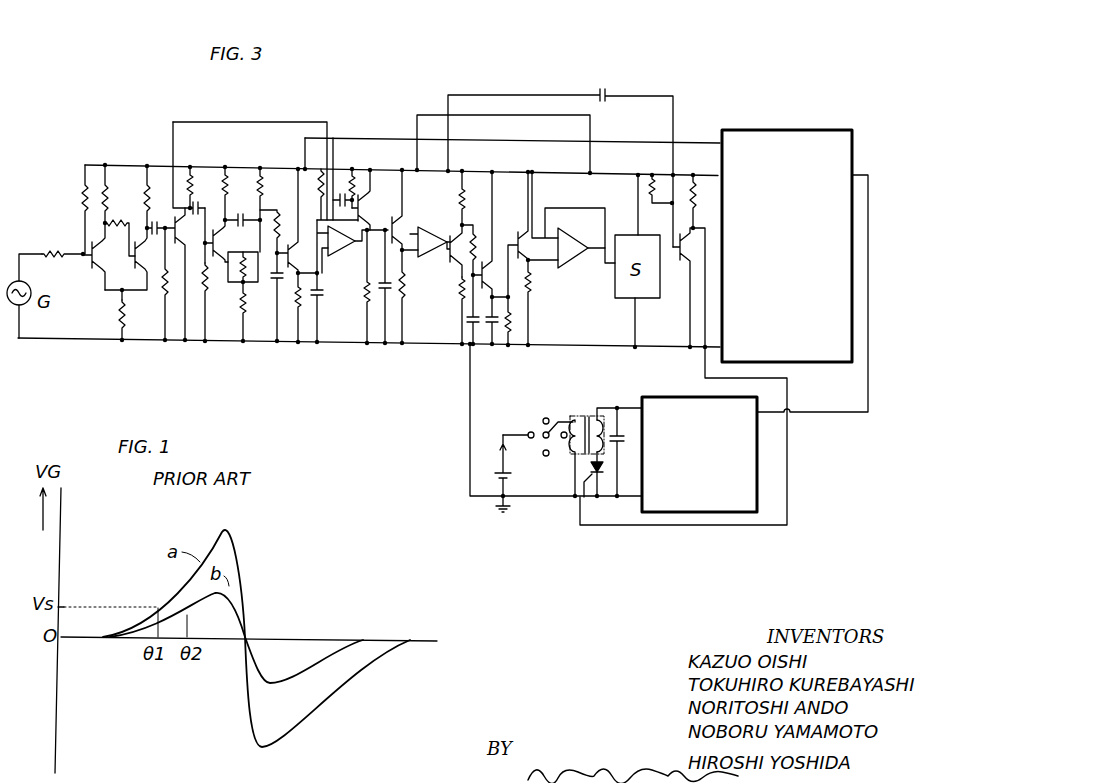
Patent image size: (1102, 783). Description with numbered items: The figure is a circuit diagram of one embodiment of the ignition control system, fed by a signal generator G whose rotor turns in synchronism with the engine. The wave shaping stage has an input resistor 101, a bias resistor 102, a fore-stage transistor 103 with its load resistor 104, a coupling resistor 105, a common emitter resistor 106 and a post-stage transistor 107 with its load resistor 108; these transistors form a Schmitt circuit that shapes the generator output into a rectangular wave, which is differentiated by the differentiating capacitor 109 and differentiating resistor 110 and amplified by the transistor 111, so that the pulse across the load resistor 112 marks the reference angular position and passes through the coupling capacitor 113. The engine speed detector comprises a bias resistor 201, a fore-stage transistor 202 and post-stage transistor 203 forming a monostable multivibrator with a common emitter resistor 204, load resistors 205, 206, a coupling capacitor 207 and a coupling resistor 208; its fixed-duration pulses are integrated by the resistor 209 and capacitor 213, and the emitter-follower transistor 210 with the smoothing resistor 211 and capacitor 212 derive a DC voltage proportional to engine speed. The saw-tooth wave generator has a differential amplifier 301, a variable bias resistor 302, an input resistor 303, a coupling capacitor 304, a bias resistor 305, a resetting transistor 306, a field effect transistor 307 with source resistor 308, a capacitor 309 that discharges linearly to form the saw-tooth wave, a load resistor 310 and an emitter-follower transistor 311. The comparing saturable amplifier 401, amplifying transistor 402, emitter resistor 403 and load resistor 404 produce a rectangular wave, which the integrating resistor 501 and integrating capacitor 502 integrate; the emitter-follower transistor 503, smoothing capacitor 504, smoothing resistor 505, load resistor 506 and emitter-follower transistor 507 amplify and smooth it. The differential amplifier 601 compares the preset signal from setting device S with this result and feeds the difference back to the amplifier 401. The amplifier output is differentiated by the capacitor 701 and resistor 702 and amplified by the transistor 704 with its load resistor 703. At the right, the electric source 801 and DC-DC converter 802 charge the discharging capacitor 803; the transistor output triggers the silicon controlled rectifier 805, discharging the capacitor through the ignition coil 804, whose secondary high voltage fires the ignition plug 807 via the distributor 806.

The input resistor 101 is at (56, 249).
The bias resistor 102 is at (79, 209).
The fore-stage transistor 103 is at (88, 270).
The load resistor 104 is at (102, 180).
The coupling resistor 105 is at (120, 220).
The common emitter resistor 106 is at (118, 318).
The post-stage transistor 107 is at (126, 259).
The load resistor 108 is at (148, 180).
The differentiating capacitor 109 is at (134, 306).
The differentiating resistor 110 is at (170, 300).
The transistor for amplifying a differentiated pulse 111 is at (182, 250).
The load resistor 112 is at (189, 172).
The coupling capacitor 113 is at (195, 204).
The bias resistor 201 is at (200, 225).
The fore-stage transistor 202 is at (233, 296).
The post-stage transistor 203 is at (263, 320).
The common emitter resistor 204 is at (246, 320).
The load resistor 205 is at (223, 172).
The load resistor 206 is at (264, 174).
The coupling capacitor 207 is at (245, 212).
The coupling resistor 208 is at (245, 267).
The resistor 209 is at (285, 215).
The transistor 210 is at (297, 345).
The resistor 211 is at (306, 337).
The capacitor 212 is at (324, 300).
The capacitor 213 is at (278, 300).
The differential amplifier 301 is at (346, 250).
The variable bias resistor 302 is at (305, 142).
The input resistor 303 is at (330, 150).
The coupling capacitor 304 is at (326, 178).
The bias resistor 305 is at (356, 186).
The resetting transistor 306 is at (369, 212).
The field effect transistor 307 is at (337, 231).
The source resistor 308 is at (365, 320).
The capacitor for generating a saw-tooth wave 309 is at (386, 325).
The load resistor 310 is at (408, 286).
The transistor 311 is at (406, 252).
The comparing saturable amplifier 401 is at (431, 226).
The transistor 402 is at (455, 268).
The emitter resistor 403 is at (460, 316).
The load resistor 404 is at (466, 185).
The integrating resistor 501 is at (480, 218).
The integrating capacitor 502 is at (471, 330).
The emitter-follower transistor 503 is at (490, 260).
The smoothing capacitor 504 is at (498, 330).
The smoothing resistor 505 is at (512, 340).
The load resistor 506 is at (532, 278).
The emitter-follower transistor 507 is at (546, 216).
The differential amplifier 601 is at (580, 256).
The differentiating capacitor 701 is at (606, 98).
The resistor 702 is at (656, 181).
The load resistor 703 is at (698, 196).
The transistor 704 is at (683, 262).
The electric source 801 is at (768, 131).
The DC-DC converter 802 is at (683, 396).
The discharging capacitor 803 is at (620, 446).
The ignition coil 804 is at (573, 456).
The silicon controlled rectifier 805 is at (596, 490).
The distributor 806 is at (547, 458).
The ignition plug 807 is at (490, 473).